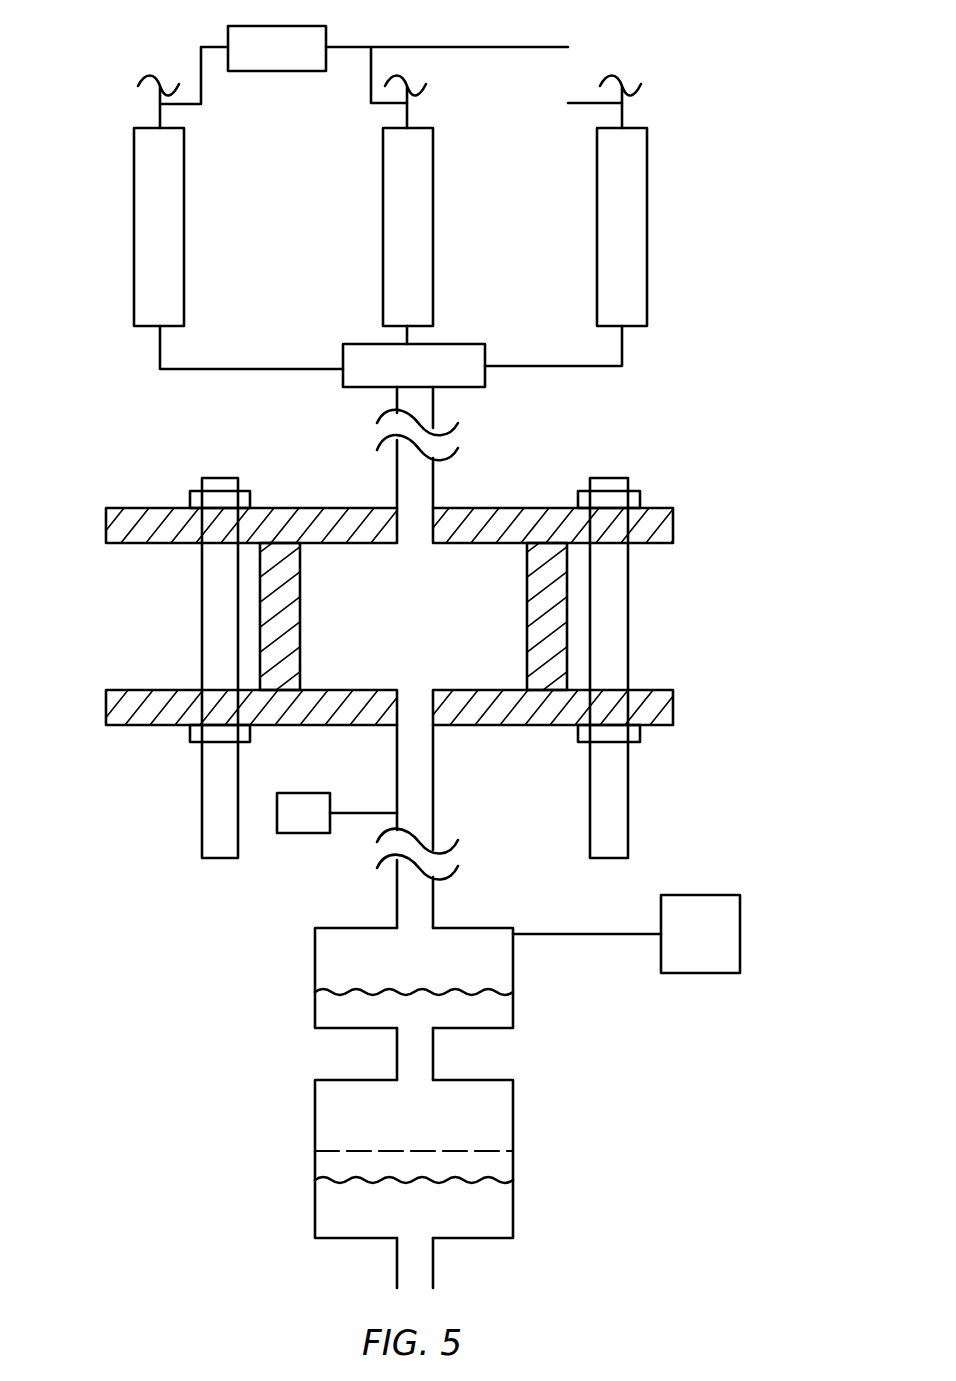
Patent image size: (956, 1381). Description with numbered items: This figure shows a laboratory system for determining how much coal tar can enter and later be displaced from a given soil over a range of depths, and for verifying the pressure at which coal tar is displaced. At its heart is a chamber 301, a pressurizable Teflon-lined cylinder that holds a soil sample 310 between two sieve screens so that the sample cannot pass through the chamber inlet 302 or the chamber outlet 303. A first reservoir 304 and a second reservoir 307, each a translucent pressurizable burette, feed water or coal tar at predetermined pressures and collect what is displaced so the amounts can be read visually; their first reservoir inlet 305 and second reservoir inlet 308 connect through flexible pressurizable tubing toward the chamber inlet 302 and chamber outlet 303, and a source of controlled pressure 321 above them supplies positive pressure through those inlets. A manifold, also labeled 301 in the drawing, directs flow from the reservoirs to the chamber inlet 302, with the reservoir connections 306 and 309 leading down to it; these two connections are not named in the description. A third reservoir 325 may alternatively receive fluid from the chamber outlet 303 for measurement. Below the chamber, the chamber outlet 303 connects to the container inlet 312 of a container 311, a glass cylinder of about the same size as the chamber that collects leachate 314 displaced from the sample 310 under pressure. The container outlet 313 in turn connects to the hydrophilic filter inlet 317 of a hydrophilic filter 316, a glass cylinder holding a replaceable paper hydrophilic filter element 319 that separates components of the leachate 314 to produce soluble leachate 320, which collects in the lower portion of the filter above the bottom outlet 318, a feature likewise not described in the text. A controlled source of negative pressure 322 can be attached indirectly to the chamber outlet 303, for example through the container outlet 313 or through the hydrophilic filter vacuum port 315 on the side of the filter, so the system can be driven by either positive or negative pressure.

The chamber 301 is at (424, 580).
The chamber inlet 302 is at (451, 447).
The chamber outlet 303 is at (444, 826).
The first reservoir 304 is at (115, 222).
The first reservoir inlet 305 is at (125, 102).
The gas line 306 is at (200, 353).
The second reservoir 307 is at (668, 227).
The second reservoir inlet 308 is at (658, 102).
The gas line 309 is at (611, 353).
The sample 310 is at (327, 616).
The container 311 is at (370, 978).
The container inlet 312 is at (358, 904).
The container outlet 313 is at (364, 1053).
The leachate 314 is at (455, 1015).
The hydrophilic filter vacuum port 315 is at (658, 910).
The hydrophilic filter 316 is at (462, 1159).
The hydrophilic filter inlet 317 is at (465, 1059).
The outlet 318 is at (459, 1263).
The hydrophilic filter element 319 is at (465, 1162).
The soluble leachate 320 is at (370, 1205).
The source of controlled pressure 321 is at (376, 53).
The controlled source of negative pressure 322 is at (323, 837).
The third reservoir 325 is at (452, 201).